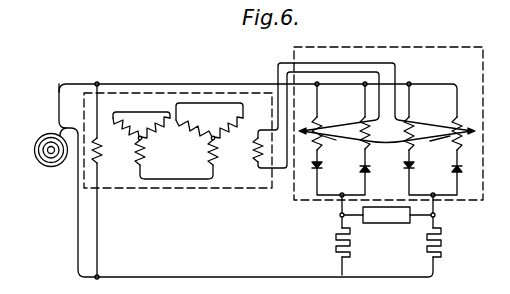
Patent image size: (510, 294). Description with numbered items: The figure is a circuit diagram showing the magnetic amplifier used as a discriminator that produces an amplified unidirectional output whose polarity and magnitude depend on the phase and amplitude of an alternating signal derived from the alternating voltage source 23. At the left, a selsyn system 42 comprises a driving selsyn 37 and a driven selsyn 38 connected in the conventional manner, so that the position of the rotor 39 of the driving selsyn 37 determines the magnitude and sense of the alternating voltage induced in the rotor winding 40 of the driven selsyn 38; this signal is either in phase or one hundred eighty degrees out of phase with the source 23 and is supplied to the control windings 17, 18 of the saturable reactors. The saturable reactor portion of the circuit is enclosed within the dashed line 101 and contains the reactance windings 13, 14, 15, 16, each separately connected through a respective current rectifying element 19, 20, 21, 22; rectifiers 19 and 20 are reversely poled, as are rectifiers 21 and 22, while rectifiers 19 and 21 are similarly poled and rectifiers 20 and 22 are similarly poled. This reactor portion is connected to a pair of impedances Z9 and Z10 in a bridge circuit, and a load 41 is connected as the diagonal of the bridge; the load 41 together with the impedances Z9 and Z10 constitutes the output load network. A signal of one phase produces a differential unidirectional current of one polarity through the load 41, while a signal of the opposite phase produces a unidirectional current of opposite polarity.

The alternating voltage source 23 is at (58, 133).
The rotor 39 is at (95, 155).
The selsyn system 42 is at (162, 188).
The driving selsyn 37 is at (137, 142).
The driven selsyn 38 is at (216, 141).
The rotor winding 40 is at (258, 170).
The saturable reactor portion 101 is at (451, 47).
The reactance winding 13 is at (317, 122).
The reactance winding 14 is at (364, 122).
The reactance winding 15 is at (410, 122).
The reactance winding 16 is at (457, 122).
The control winding 17 is at (338, 143).
The control winding 18 is at (433, 142).
The current rectifying element 19 is at (316, 170).
The current rectifying element 20 is at (364, 172).
The current rectifying element 21 is at (408, 171).
The current rectifying element 22 is at (456, 172).
The load 41 is at (385, 223).
The impedance Z9 is at (330, 242).
The impedance Z10 is at (451, 242).